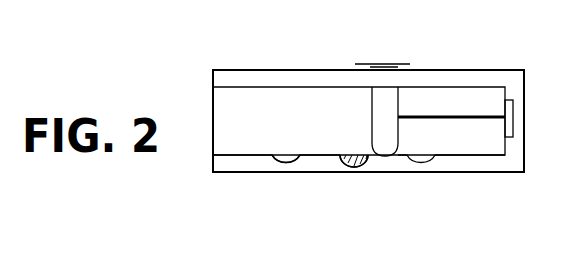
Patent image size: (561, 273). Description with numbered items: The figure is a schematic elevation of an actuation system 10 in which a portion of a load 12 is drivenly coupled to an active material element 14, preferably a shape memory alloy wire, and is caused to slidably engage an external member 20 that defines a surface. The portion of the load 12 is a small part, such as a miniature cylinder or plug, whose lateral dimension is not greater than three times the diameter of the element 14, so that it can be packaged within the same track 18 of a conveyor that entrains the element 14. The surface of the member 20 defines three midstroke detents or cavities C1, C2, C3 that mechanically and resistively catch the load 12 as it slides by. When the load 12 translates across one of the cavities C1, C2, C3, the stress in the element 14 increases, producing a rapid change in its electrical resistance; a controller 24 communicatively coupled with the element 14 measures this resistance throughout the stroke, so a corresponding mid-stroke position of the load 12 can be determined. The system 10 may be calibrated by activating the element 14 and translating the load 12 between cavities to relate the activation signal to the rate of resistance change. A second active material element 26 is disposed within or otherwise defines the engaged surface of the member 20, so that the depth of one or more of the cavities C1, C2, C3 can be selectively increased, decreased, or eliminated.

The system 10 is at (222, 45).
The portion of a load 12 is at (388, 63).
The active material element 14 is at (460, 117).
The track 18 is at (259, 133).
The external member 20 is at (483, 172).
The controller 24 is at (513, 132).
The second active material element 26 is at (352, 162).
The first cavity C1 is at (285, 162).
The second cavity C2 is at (353, 167).
The third cavity C3 is at (423, 161).